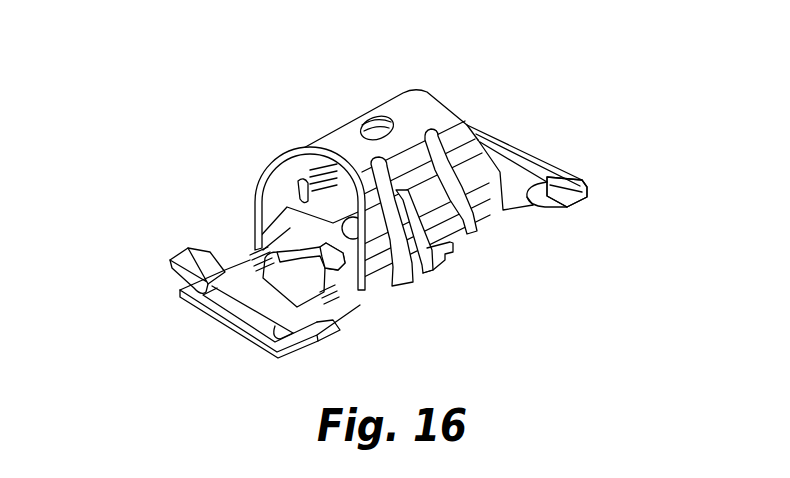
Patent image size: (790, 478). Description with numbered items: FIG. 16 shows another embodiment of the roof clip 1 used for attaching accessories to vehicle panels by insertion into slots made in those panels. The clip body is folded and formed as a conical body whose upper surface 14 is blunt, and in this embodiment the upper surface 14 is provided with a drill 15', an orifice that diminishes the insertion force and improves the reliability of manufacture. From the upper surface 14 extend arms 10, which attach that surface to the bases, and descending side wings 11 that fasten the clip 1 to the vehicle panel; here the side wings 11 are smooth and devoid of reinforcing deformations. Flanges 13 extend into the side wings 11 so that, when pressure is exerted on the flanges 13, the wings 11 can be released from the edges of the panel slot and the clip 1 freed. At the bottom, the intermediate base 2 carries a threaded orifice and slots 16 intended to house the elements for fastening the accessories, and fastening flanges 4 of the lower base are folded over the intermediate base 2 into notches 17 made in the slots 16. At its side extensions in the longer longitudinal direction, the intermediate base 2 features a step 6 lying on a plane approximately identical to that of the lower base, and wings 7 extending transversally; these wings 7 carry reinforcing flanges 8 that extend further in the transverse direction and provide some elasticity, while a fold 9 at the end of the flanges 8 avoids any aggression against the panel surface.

The clip 1 is at (308, 118).
The intermediate base 2 is at (320, 225).
The fastening flanges 4 is at (340, 266).
The step 6 is at (337, 319).
The wings 7 is at (510, 142).
The reinforcing flanges 8 is at (552, 180).
The fold 9 is at (170, 259).
The arms 10 is at (382, 246).
The side wings 11 is at (433, 198).
The flanges 13 is at (442, 268).
The upper surface 14 is at (412, 105).
The drill 15' is at (380, 77).
The slots 16 is at (270, 265).
The notches 17 is at (288, 280).